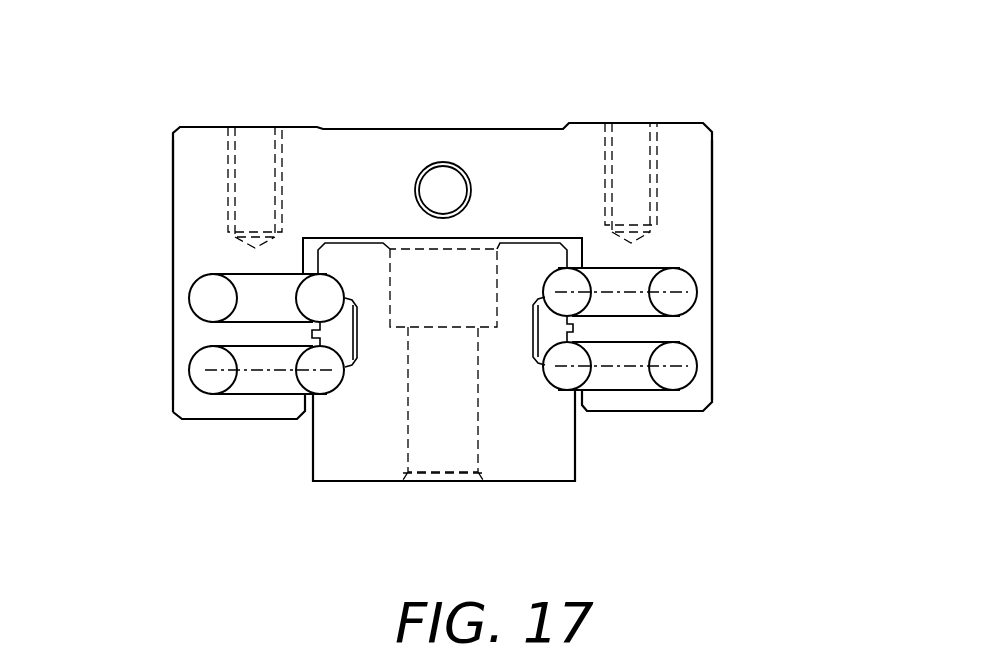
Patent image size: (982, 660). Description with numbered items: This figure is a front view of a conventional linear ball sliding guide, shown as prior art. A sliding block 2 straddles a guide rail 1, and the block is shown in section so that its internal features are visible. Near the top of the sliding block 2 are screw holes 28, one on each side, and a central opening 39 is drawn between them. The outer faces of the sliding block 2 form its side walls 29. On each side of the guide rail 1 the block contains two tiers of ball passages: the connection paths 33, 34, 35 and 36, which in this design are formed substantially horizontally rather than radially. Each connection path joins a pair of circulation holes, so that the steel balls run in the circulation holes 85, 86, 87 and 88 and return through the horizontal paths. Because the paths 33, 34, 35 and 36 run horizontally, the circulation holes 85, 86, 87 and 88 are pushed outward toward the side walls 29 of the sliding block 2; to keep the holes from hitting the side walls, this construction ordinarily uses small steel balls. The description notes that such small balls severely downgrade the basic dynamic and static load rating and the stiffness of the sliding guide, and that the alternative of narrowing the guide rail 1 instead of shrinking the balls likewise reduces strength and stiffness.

The guide rail 1 is at (358, 443).
The sliding block 2 is at (367, 150).
The screw hole 28 is at (253, 138).
The side wall 29 is at (173, 183).
The connection path 33 is at (628, 312).
The connection path 34 is at (243, 317).
The connection path 35 is at (618, 382).
The connection path 36 is at (255, 387).
The grease nipple hole 39 is at (448, 180).
The circulation hole 85 is at (692, 272).
The circulation hole 86 is at (195, 282).
The circulation hole 87 is at (697, 378).
The circulation hole 88 is at (188, 375).